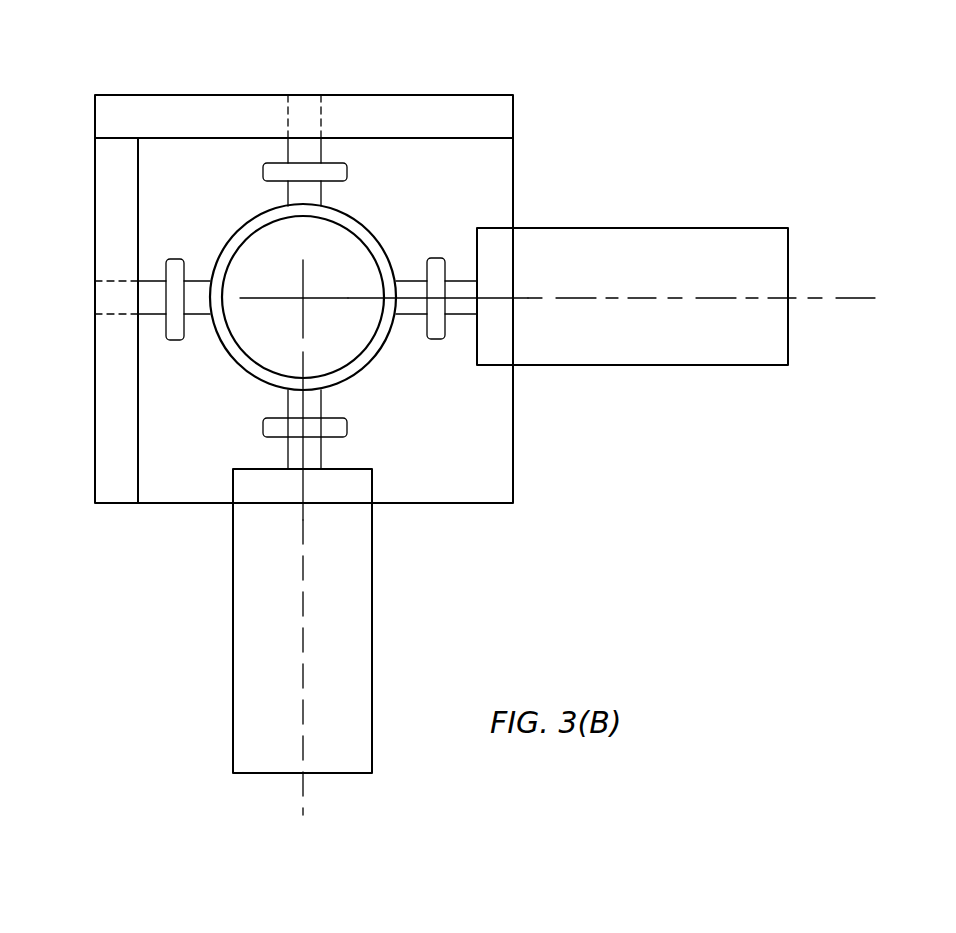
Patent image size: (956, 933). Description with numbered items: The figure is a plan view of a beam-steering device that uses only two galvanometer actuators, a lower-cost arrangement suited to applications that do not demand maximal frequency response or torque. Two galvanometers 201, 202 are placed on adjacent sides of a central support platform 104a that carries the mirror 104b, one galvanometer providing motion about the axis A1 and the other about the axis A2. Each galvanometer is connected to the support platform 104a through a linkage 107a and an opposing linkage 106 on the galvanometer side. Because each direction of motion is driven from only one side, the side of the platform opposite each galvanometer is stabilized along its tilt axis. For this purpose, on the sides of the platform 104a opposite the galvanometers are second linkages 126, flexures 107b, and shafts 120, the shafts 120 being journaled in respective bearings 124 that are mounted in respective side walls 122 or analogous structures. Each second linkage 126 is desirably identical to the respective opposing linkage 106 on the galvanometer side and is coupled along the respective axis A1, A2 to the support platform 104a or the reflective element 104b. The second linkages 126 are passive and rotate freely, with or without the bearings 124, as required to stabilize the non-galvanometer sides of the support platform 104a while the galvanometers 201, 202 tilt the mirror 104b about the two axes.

The side wall 122 is at (204, 115).
The bearing 124 is at (318, 124).
The shaft 120 is at (288, 148).
The second linkage 126 is at (286, 191).
The flexure 107b is at (348, 170).
The linkage 107a is at (438, 340).
The mirror 104b is at (369, 236).
The support platform 104a is at (366, 371).
The linkage 106 is at (458, 277).
The galvanometer 201 is at (362, 646).
The galvanometer 202 is at (683, 352).
The axis A1 is at (303, 798).
The axis A2 is at (812, 298).